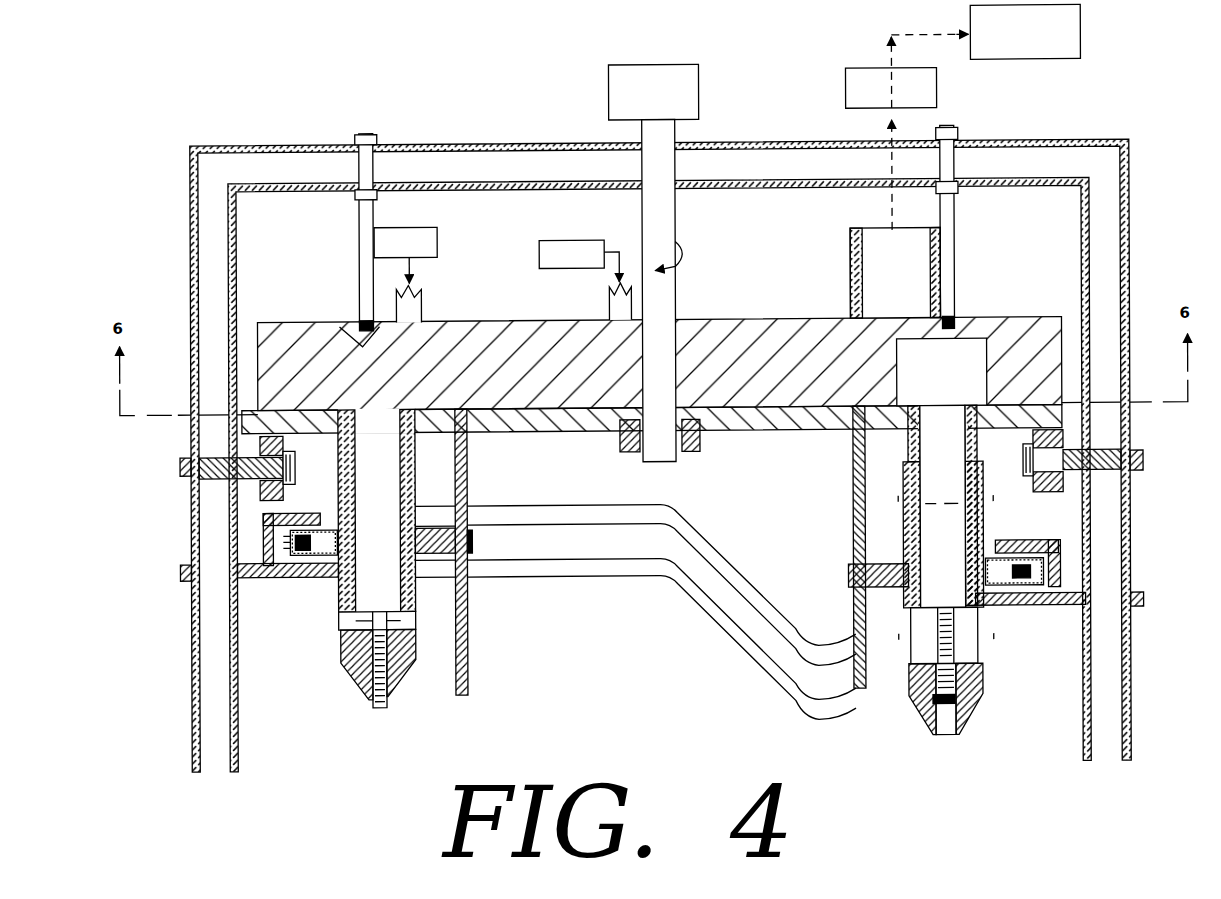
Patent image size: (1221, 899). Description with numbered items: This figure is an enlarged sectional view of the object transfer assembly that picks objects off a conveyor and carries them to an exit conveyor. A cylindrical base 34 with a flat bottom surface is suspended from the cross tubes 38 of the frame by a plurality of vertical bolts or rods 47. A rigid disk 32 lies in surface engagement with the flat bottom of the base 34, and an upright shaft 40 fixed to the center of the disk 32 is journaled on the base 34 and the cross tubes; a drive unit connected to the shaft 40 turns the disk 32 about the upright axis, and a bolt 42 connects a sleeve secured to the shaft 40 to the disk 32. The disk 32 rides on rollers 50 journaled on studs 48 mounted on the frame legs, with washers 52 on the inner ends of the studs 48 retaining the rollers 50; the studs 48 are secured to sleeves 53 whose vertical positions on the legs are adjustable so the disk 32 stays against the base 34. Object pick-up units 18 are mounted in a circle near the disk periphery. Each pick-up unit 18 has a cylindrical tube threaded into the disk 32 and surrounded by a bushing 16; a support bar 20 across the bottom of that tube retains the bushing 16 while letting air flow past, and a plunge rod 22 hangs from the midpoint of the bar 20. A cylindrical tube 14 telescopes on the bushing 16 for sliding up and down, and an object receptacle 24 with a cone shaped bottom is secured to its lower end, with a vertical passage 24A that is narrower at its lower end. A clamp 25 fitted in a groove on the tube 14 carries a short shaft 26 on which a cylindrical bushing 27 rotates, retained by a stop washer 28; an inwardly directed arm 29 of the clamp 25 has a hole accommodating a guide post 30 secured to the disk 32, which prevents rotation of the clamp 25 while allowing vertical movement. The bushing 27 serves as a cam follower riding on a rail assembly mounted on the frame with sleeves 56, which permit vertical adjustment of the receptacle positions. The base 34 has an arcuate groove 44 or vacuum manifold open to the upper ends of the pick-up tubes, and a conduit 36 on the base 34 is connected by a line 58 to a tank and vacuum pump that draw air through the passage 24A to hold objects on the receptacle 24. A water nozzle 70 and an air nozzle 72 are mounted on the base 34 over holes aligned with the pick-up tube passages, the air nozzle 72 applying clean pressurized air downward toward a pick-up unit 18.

The cylindrical tube 14 is at (903, 468).
The bushing 16 is at (903, 481).
The object pick-up unit 18 is at (897, 497).
The support bar 20 is at (908, 606).
The plunge rod 22 is at (982, 696).
The object receptacle 24 is at (907, 706).
The vertical orifice or passage 24A is at (948, 729).
The clamp 25 is at (417, 526).
The short shaft 26 is at (305, 576).
The cylindrical bushing 27 is at (328, 562).
The stop washer 28 is at (290, 562).
The inwardly directed arm 29 is at (472, 542).
The guide post 30 is at (467, 629).
The rigid disk 32 is at (726, 423).
The cylindrical base 34 is at (697, 330).
The pipe or conduit 36 is at (877, 270).
The cross tubes 38 is at (1098, 222).
The upright shaft 40 is at (660, 232).
The bolt 42 is at (628, 453).
The arcuate groove or vacuum manifold 44 is at (968, 381).
The vertical bolts or rods 47 is at (952, 230).
The studs 48 is at (252, 462).
The rollers 50 is at (262, 438).
The washers 52 is at (258, 489).
The sleeves 53 is at (1132, 470).
The sleeves 56 is at (1137, 582).
The line 58 is at (891, 137).
The water nozzle 70 is at (410, 304).
The air nozzle 72 is at (620, 305).